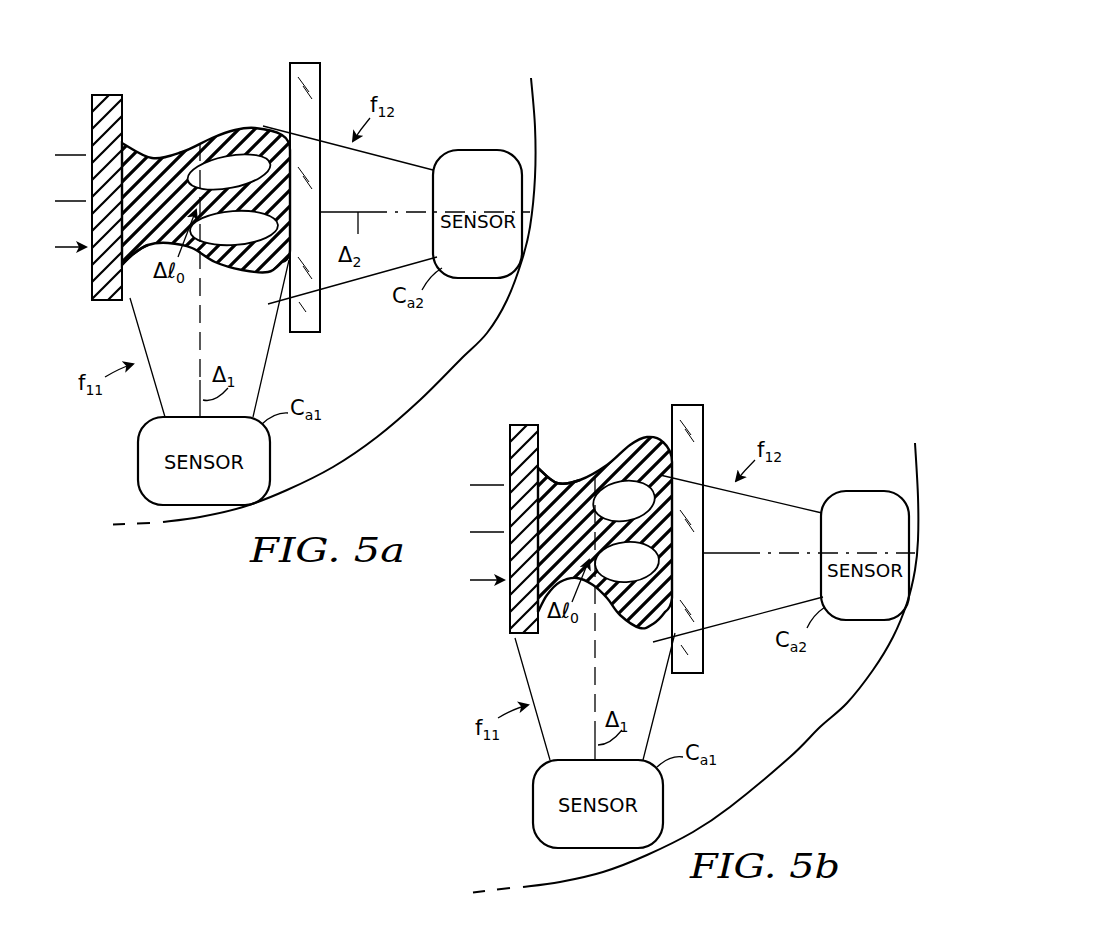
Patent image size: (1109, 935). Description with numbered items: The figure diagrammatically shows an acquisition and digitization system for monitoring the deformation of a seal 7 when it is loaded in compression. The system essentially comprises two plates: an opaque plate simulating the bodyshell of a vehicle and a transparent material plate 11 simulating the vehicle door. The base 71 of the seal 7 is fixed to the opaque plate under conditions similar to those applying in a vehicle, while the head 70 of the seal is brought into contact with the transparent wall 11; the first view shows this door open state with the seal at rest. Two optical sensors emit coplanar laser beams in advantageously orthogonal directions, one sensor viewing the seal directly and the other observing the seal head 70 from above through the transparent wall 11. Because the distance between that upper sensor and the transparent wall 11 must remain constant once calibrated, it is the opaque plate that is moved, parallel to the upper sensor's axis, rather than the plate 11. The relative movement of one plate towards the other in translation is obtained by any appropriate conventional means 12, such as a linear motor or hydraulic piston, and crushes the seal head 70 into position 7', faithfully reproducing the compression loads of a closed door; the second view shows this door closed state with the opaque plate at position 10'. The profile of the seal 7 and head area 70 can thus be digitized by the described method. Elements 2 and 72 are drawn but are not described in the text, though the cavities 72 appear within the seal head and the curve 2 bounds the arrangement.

In FIG. 5a, the circle / circumference (housing boundary) 2 is at (383, 460).
In FIG. 5b, the circle / circumference (housing boundary) 2 is at (792, 760).
In FIG. 5a, the seal 7 is at (208, 222).
In FIG. 5b, the crushed seal position 7' is at (607, 542).
In FIG. 5a, the opaque plate position 10' is at (75, 298).
In FIG. 5b, the opaque plate position 10' is at (492, 635).
In FIG. 5a, the transparent material plate 11 is at (298, 50).
In FIG. 5b, the transparent material plate 11 is at (693, 392).
In FIG. 5a, the conventional means 12 is at (80, 128).
In FIG. 5b, the conventional means 12 is at (484, 471).
In FIG. 5a, the head 70 is at (238, 116).
In FIG. 5b, the head 70 is at (635, 428).
In FIG. 5a, the base 71 is at (130, 262).
In FIG. 5b, the base 71 is at (548, 463).
In FIG. 5a, the lens holes / cavities 72 is at (241, 242).
In FIG. 5b, the lens holes / cavities 72 is at (637, 588).